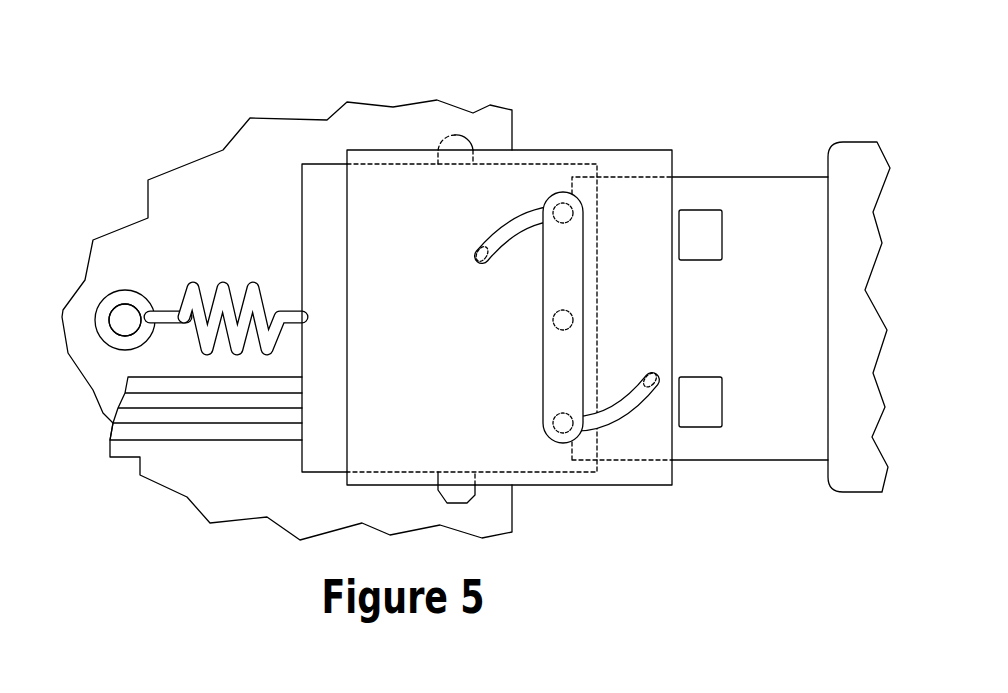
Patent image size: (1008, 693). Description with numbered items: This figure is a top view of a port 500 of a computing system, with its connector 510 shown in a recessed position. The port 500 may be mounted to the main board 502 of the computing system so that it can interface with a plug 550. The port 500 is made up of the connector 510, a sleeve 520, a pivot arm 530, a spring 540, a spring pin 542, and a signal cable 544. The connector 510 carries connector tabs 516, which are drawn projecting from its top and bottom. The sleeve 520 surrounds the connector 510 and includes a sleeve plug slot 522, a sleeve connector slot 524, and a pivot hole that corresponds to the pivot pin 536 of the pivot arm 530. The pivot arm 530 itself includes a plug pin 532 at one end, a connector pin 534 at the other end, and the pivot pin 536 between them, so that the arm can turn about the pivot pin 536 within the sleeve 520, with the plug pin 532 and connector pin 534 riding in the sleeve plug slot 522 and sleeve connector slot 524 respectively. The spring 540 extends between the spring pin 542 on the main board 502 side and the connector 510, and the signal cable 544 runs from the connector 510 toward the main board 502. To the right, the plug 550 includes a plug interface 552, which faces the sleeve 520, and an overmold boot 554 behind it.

The port 500 is at (637, 498).
The main board 502 is at (240, 507).
The connector 510 is at (302, 193).
The connector tabs 516 is at (473, 143).
The sleeve 520 is at (620, 150).
The sleeve plug slot 522 is at (472, 260).
The sleeve connector slot 524 is at (650, 368).
The pivot arm 530 is at (543, 366).
The plug pin 532 is at (585, 213).
The connector pin 534 is at (543, 425).
The pivot pin 536 is at (543, 320).
The spring 540 is at (268, 293).
The spring pin 542 is at (130, 310).
The signal cable 544 is at (263, 458).
The plug 550 is at (775, 148).
The plug interface 552 is at (747, 460).
The overmold boot 554 is at (860, 492).